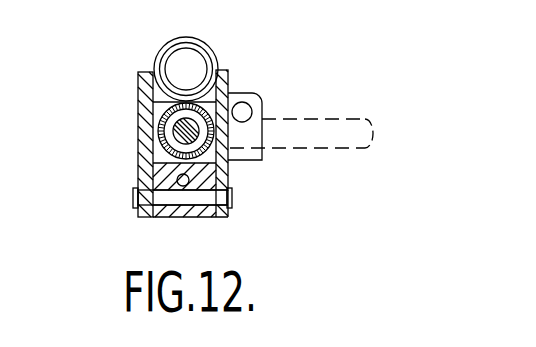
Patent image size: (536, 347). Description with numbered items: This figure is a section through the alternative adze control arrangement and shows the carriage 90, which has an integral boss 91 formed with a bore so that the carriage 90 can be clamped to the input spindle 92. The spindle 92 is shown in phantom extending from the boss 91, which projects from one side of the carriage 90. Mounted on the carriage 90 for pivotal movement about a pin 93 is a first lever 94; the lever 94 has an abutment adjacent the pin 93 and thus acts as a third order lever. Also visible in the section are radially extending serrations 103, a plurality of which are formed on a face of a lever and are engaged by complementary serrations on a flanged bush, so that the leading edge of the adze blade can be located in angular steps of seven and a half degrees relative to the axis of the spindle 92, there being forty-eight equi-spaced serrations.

The carriage 90 is at (147, 131).
The radially extending serrations 103 is at (199, 113).
The integral boss 91 is at (254, 95).
The input spindle 92 is at (324, 135).
The first lever 94 is at (190, 180).
The pin 93 is at (203, 198).